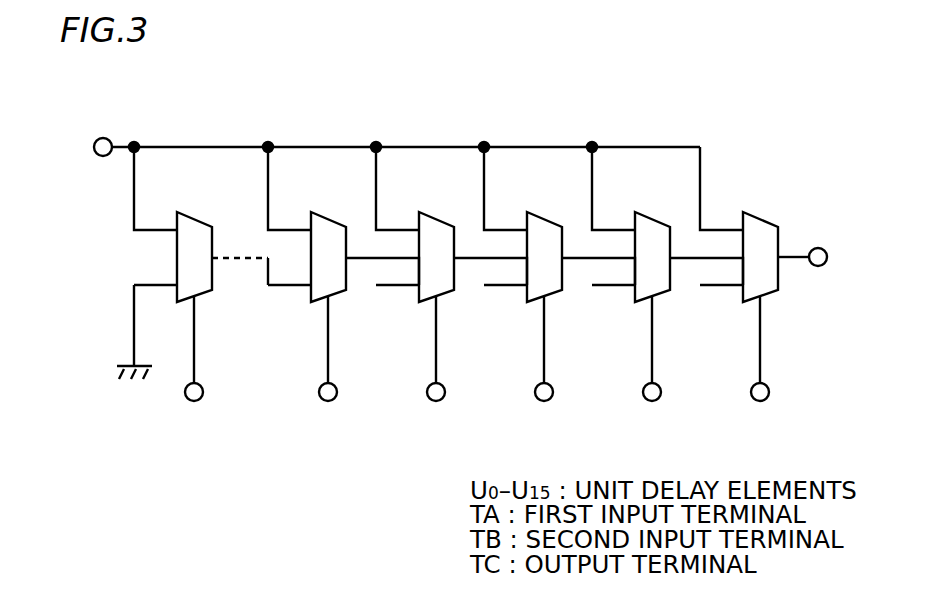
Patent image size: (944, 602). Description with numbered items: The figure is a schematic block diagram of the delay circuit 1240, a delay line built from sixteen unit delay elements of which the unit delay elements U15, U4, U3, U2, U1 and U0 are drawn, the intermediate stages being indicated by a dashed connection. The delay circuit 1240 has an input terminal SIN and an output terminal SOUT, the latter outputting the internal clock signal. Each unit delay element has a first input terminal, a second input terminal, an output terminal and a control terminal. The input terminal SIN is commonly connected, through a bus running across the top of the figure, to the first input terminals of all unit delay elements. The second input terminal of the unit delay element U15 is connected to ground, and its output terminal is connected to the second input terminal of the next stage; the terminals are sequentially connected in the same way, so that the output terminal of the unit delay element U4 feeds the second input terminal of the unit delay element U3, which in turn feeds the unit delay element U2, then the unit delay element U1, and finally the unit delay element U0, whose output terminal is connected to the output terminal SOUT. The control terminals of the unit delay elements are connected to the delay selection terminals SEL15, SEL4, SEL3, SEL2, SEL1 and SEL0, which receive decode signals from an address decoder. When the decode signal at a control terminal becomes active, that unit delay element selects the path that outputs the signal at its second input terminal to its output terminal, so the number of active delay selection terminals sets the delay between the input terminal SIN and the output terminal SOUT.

The delay circuit 1240 is at (770, 86).
The unit delay element U15 is at (201, 212).
The unit delay element U4 is at (335, 212).
The unit delay element U3 is at (443, 212).
The unit delay element U2 is at (551, 212).
The unit delay element U1 is at (659, 212).
The unit delay element U0 is at (767, 212).
The input terminal SIN is at (104, 138).
The output terminal SOUT is at (818, 248).
The delay selection terminal SEL15 is at (194, 401).
The delay selection terminal SEL4 is at (328, 401).
The delay selection terminal SEL3 is at (436, 401).
The delay selection terminal SEL2 is at (544, 401).
The delay selection terminal SEL1 is at (652, 401).
The delay selection terminal SEL0 is at (760, 401).